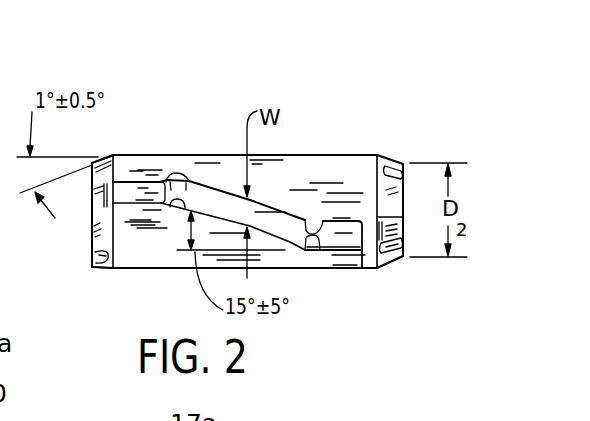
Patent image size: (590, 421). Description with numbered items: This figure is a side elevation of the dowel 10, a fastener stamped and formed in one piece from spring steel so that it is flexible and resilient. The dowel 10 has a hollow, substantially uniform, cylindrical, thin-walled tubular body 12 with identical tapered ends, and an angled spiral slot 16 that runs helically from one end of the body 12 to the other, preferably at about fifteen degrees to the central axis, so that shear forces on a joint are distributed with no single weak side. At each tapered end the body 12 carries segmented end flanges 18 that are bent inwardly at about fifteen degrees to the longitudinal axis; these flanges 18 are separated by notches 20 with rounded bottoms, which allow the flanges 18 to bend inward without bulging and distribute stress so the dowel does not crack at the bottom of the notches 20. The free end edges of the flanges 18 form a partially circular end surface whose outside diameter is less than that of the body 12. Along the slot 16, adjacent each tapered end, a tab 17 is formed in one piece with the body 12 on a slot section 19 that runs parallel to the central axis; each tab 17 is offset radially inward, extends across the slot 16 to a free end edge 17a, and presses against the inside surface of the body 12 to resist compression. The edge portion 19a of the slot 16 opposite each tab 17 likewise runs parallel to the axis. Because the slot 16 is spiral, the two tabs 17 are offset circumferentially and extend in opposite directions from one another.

The dowel 10 is at (346, 76).
The tubular body 12 is at (298, 152).
The spiral slot 16 is at (200, 182).
The tab 17 is at (166, 182).
The free end edge 17a is at (157, 176).
The segmented end flange 18 is at (403, 183).
The slot section 19 is at (308, 230).
The slot edge portion 19a is at (180, 176).
The notch 20 is at (388, 157).